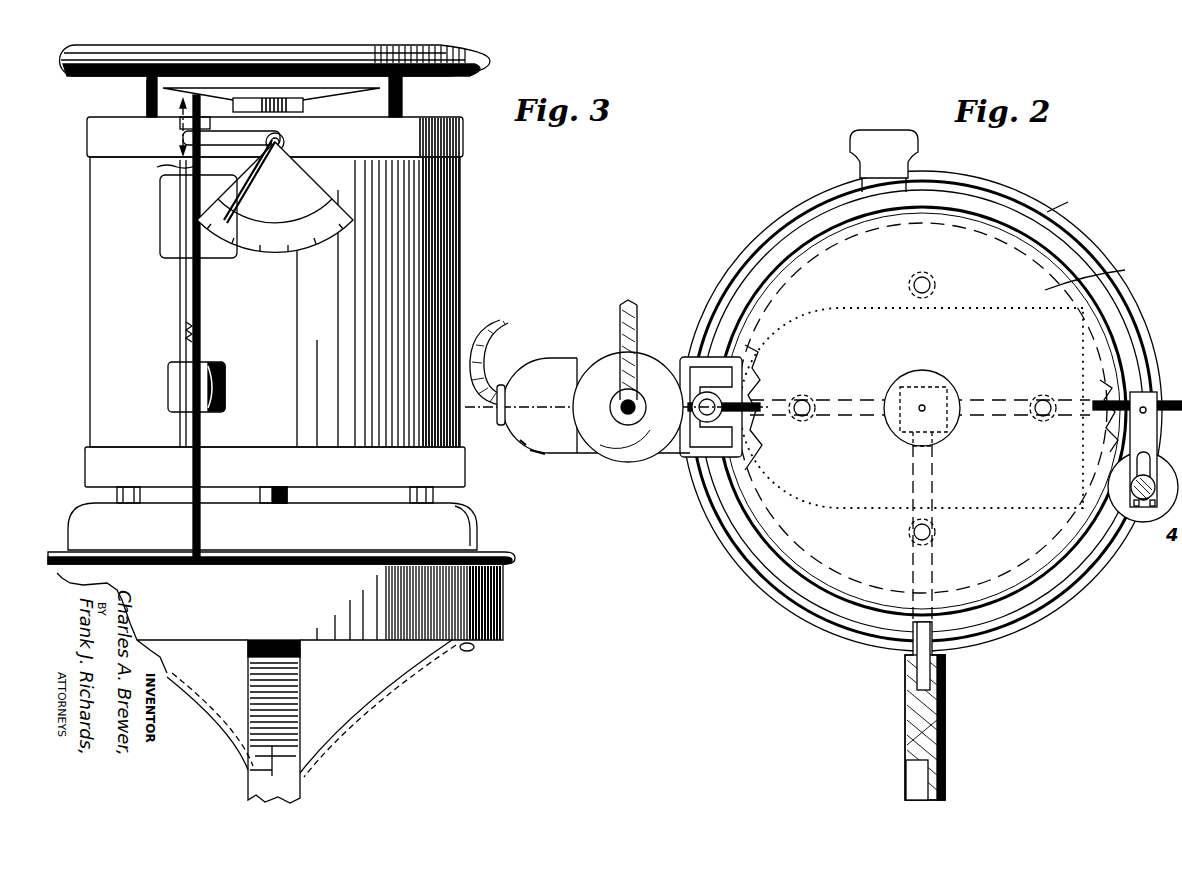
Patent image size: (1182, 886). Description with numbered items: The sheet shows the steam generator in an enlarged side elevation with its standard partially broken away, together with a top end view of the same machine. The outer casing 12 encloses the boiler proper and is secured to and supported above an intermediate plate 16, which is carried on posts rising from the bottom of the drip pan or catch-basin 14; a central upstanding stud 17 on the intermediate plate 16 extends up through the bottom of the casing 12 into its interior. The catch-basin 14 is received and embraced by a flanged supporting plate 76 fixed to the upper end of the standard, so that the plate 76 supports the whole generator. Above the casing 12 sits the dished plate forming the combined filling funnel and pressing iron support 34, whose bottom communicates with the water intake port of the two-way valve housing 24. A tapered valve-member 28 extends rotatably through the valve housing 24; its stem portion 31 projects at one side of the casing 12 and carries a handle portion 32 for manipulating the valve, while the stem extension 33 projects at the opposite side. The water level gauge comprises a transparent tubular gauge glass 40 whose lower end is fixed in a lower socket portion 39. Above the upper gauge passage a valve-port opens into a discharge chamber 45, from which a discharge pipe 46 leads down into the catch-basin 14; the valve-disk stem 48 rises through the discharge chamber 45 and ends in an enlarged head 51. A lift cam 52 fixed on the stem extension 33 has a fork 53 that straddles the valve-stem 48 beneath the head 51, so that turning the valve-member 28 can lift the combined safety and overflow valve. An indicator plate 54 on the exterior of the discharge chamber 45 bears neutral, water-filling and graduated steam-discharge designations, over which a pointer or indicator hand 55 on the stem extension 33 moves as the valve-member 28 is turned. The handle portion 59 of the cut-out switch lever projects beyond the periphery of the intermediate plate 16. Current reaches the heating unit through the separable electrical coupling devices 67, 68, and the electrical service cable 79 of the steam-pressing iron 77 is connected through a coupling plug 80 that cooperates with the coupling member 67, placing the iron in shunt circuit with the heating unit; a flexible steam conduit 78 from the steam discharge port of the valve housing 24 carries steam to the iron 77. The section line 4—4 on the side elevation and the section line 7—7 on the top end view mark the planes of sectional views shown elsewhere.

In FIG. 3, the section line 4- 4 is at (175, 45).
In FIG. 2, the section line 7- 7 is at (850, 393).
In FIG. 3, the outer casing 12 is at (460, 233).
In FIG. 2, the outer casing 12 is at (727, 483).
In FIG. 3, the drip pan or catch-basin 14 is at (483, 550).
In FIG. 2, the drip pan or catch-basin 14 is at (1067, 202).
In FIG. 3, the intermediate plate 16 is at (445, 524).
In FIG. 3, the upstanding stud 17 is at (287, 497).
In FIG. 3, the valve housing 24 is at (317, 110).
In FIG. 2, the valve housing 24 is at (947, 397).
In FIG. 2, the valve-member 28 is at (940, 386).
In FIG. 2, the stem portion 31 is at (700, 460).
In FIG. 2, the handle portion 32 is at (696, 425).
In FIG. 3, the stem extension 33 is at (287, 142).
In FIG. 2, the stem extension 33 is at (1148, 398).
In FIG. 3, the combined filling funnel and pressing iron support 34 is at (492, 60).
In FIG. 2, the combined filling funnel and pressing iron support 34 is at (1095, 276).
In FIG. 3, the lower socket portion 39 is at (177, 392).
In FIG. 3, the transparent tubular gauge glass 40 is at (183, 293).
In FIG. 3, the discharge chamber 45 is at (173, 195).
In FIG. 3, the discharge pipe 46 is at (187, 333).
In FIG. 3, the valve stem 48 is at (164, 169).
In FIG. 3, the head 51 is at (148, 107).
In FIG. 2, the head 51 is at (1143, 518).
In FIG. 3, the lift cam 52 is at (257, 145).
In FIG. 2, the lift cam 52 is at (1150, 427).
In FIG. 3, the bifurcated portion or fork 53 is at (183, 135).
In FIG. 2, the bifurcated portion or fork 53 is at (1150, 483).
In FIG. 3, the indicator plate 54 is at (303, 181).
In FIG. 3, the pointer or indicator hand 55 is at (253, 185).
In FIG. 2, the handle portion 59 is at (900, 148).
In FIG. 2, the coupling member 67 is at (578, 456).
In FIG. 2, the coupling plug 68 is at (650, 362).
In FIG. 3, the flanged supporting plate 76 is at (365, 622).
In FIG. 2, the steam-pressing iron 77 is at (978, 310).
In FIG. 2, the flexible steam conduit 78 is at (943, 715).
In FIG. 2, the electrical service cable 79 is at (492, 322).
In FIG. 2, the coupling plug 80 is at (545, 368).